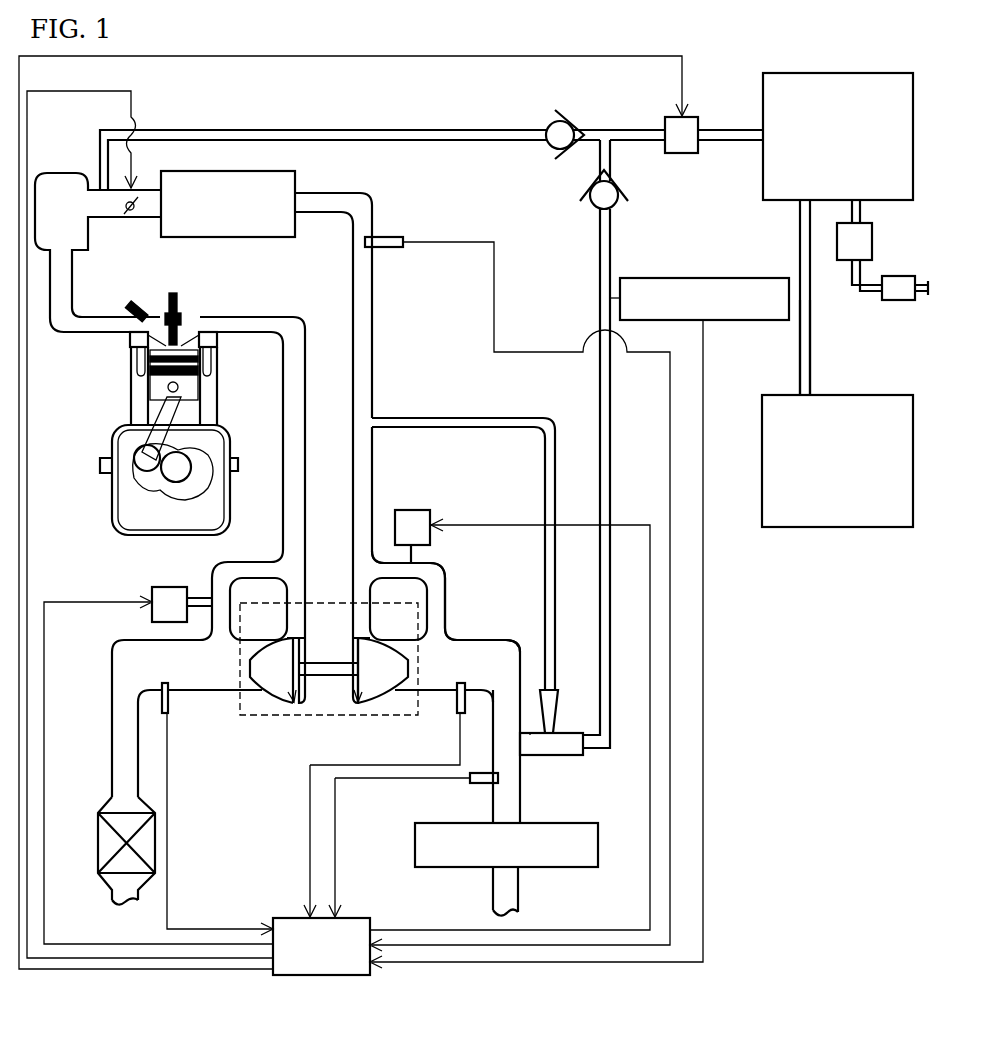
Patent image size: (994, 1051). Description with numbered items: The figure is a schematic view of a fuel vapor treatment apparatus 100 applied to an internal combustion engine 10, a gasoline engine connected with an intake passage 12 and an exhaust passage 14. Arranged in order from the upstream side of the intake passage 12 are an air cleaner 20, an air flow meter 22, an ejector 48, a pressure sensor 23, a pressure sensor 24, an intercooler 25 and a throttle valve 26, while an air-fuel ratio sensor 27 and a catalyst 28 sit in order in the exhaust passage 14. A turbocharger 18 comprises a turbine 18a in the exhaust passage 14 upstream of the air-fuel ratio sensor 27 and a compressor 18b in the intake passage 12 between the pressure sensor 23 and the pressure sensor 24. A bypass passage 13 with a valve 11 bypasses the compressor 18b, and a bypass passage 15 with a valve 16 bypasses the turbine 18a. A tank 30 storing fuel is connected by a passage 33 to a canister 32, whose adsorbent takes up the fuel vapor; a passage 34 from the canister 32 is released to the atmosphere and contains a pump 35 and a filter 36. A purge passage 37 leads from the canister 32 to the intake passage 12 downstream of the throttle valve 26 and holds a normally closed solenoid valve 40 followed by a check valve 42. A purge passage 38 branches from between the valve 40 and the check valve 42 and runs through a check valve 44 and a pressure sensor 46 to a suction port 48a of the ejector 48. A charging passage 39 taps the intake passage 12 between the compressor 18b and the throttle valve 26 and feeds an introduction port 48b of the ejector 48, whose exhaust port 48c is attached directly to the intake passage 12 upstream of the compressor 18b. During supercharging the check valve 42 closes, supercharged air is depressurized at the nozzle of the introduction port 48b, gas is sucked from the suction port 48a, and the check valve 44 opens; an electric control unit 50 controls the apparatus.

The internal combustion engine 10 is at (128, 405).
The valve 11 is at (411, 508).
The intake passage 12 is at (373, 360).
The bypass passage 13 is at (448, 583).
The exhaust passage 14 is at (112, 740).
The bypass passage 15 is at (222, 565).
The valve 16 is at (152, 590).
The turbocharger 18 is at (343, 684).
The turbine 18a is at (293, 715).
The compressor 18b is at (362, 715).
The air cleaner 20 is at (593, 868).
The air flow meter 22 is at (470, 783).
The pressure sensor 23 is at (460, 715).
The pressure sensor 24 is at (395, 248).
The intercooler 25 is at (277, 238).
The throttle valve 26 is at (131, 213).
The air-fuel ratio sensor 27 is at (168, 713).
The catalyst 28 is at (112, 818).
The tank 30 is at (830, 528).
The canister 32 is at (783, 202).
The passage 33 is at (811, 328).
The passage 34 is at (861, 218).
The pump 35 is at (873, 252).
The filter 36 is at (908, 300).
The purge passage 37 is at (456, 128).
The purge passage 38 is at (598, 378).
The charging passage 39 is at (545, 462).
The valve 40 is at (690, 155).
The check valve 42 is at (556, 150).
The check valve 44 is at (614, 175).
The pressure sensor 46 is at (730, 322).
The ejector 48 is at (566, 719).
The suction port 48a is at (585, 757).
The introduction port 48b is at (556, 692).
The exhaust port 48c is at (530, 733).
The electric control unit 50 is at (360, 916).
The fuel vapor treatment apparatus 100 is at (878, 939).